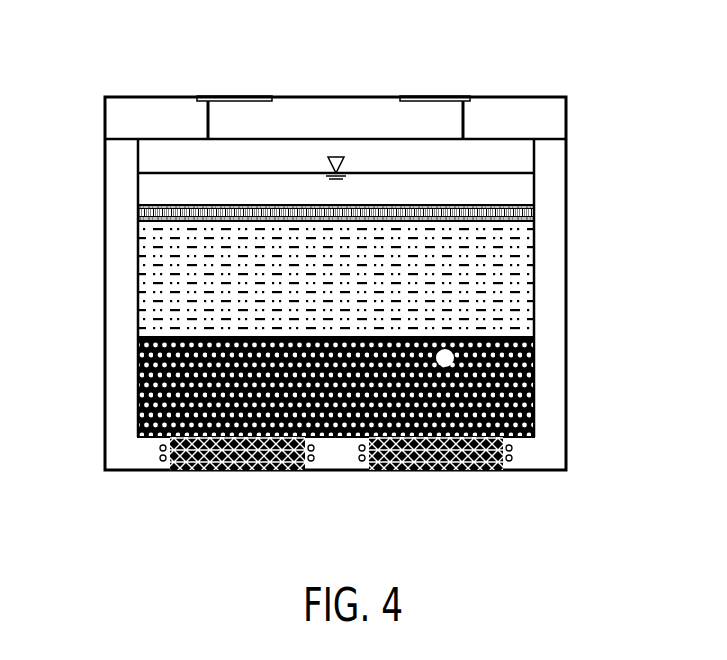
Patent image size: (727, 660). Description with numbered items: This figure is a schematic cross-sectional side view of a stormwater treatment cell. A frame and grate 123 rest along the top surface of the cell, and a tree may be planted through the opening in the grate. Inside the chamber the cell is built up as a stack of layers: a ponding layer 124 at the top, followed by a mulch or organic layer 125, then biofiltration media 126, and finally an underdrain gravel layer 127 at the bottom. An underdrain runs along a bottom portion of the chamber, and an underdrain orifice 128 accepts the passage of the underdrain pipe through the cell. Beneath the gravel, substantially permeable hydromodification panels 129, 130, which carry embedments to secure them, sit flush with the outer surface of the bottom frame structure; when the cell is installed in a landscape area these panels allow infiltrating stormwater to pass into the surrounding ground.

The frame and grate 123 is at (431, 97).
The ponding layer 124 is at (177, 183).
The mulch or organic layer 125 is at (520, 210).
The biofiltration media 126 is at (507, 272).
The underdrain gravel layer 127 is at (515, 368).
The underdrain orifice 128 is at (454, 358).
The substantially permeable hydromodification panel 129 is at (257, 470).
The substantially permeable hydromodification panel 130 is at (440, 470).